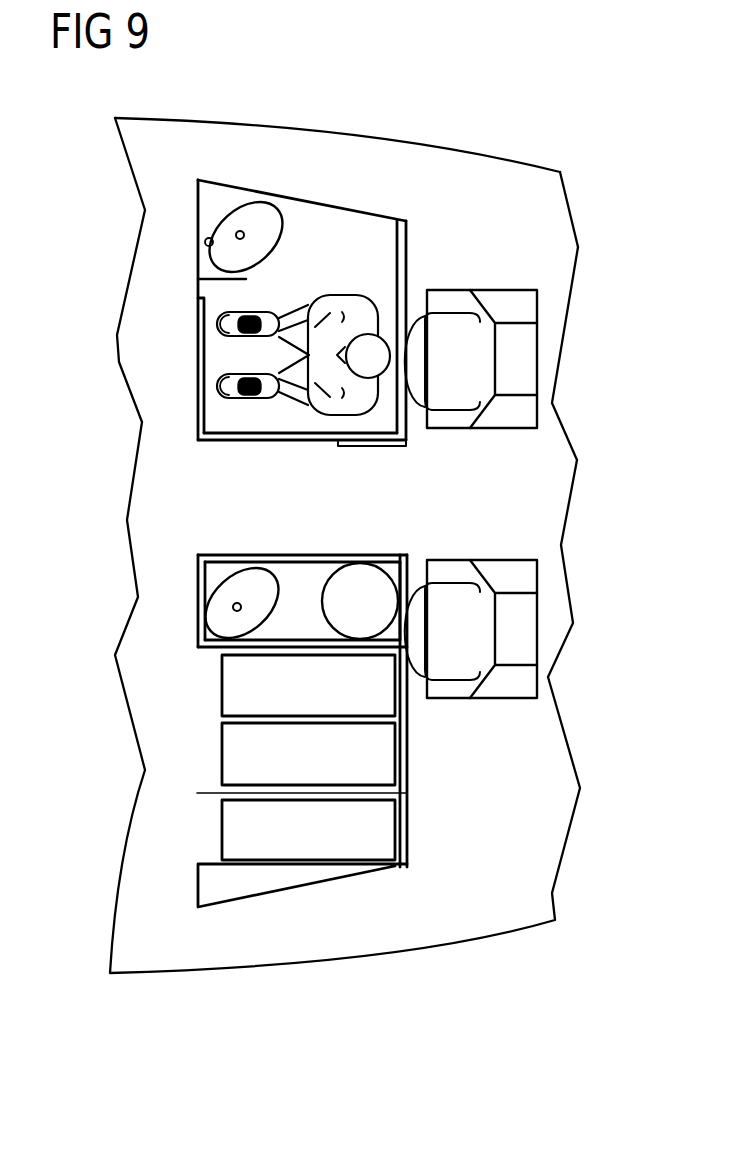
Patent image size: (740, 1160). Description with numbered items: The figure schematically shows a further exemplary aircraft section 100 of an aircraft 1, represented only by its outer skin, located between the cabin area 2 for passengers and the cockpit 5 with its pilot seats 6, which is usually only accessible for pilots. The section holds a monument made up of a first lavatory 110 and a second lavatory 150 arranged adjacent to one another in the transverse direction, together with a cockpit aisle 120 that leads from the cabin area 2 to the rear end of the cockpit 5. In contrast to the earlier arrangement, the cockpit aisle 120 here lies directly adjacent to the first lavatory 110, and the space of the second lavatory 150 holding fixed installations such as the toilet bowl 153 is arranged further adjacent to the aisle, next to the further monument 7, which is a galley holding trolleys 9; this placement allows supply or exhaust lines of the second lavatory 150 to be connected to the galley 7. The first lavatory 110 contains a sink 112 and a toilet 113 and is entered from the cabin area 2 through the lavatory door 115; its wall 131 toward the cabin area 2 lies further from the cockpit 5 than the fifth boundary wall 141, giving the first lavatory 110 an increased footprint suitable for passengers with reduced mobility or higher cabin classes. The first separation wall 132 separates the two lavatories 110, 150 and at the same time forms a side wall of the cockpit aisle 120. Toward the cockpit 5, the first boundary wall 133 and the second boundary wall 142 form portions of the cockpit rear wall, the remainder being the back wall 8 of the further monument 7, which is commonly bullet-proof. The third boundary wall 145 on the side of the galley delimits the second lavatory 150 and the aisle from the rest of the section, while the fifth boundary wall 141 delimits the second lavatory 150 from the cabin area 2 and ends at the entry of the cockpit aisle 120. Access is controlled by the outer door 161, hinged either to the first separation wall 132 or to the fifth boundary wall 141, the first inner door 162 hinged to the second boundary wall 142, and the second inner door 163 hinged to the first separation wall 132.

The aircraft 1 is at (522, 178).
The cabin area 2 is at (157, 142).
The cockpit 5 is at (556, 204).
The pilot seats 6 is at (523, 370).
The further monument 7 is at (165, 772).
The back wall 8 is at (407, 789).
The trolleys 9 is at (238, 694).
The aircraft section 100 is at (151, 250).
The first lavatory 110 is at (150, 334).
The sink 112 is at (230, 232).
The toilet 113 is at (380, 320).
The lavatory door 115 is at (197, 372).
The cockpit aisle 120 is at (150, 503).
The wall 131 is at (197, 268).
The first separation wall 132 is at (280, 435).
The first boundary wall 133 is at (403, 257).
The fifth boundary wall 141 is at (207, 577).
The second boundary wall 142 is at (398, 587).
The third boundary wall 145 is at (213, 648).
The second lavatory 150 is at (150, 612).
The toilet bowl 153 is at (370, 622).
The outer door 161 is at (240, 556).
The first inner door 162 is at (357, 556).
The second inner door 163 is at (400, 456).